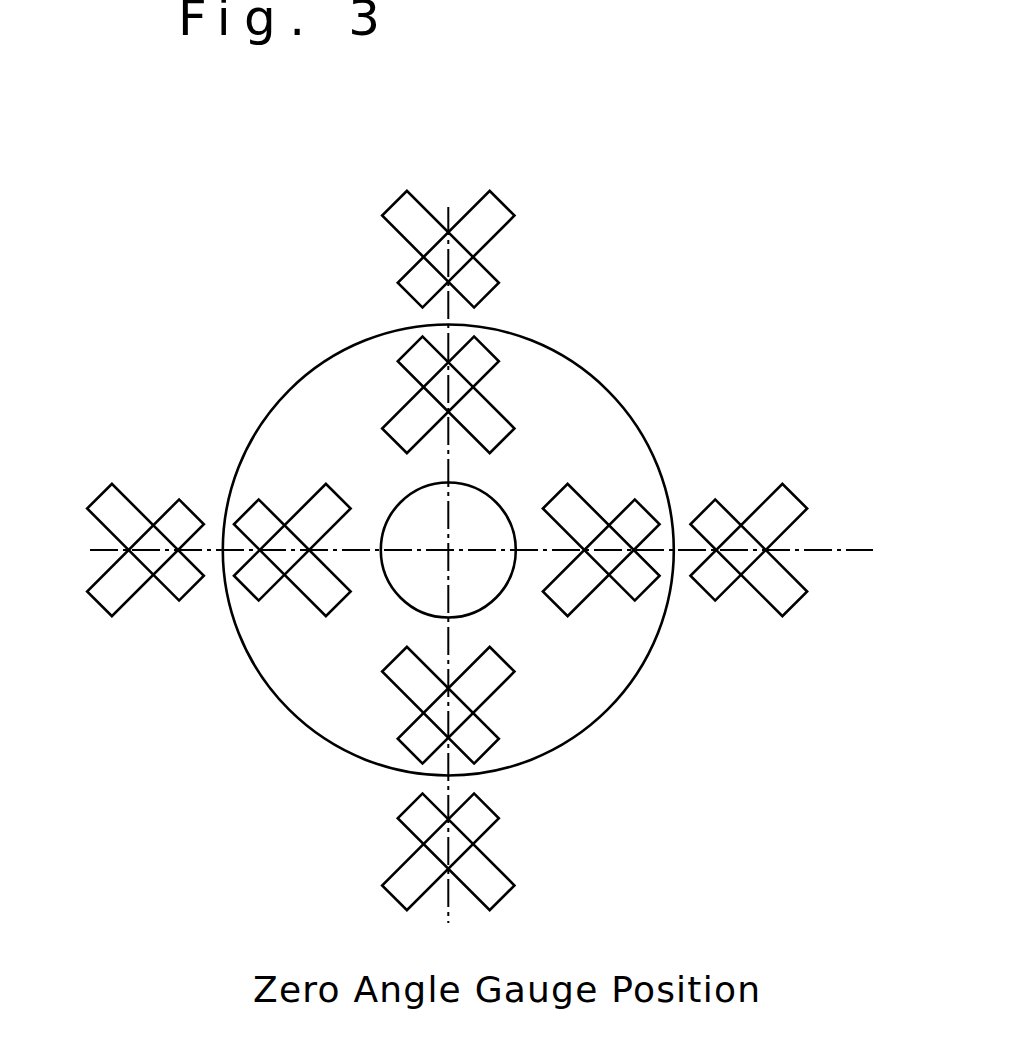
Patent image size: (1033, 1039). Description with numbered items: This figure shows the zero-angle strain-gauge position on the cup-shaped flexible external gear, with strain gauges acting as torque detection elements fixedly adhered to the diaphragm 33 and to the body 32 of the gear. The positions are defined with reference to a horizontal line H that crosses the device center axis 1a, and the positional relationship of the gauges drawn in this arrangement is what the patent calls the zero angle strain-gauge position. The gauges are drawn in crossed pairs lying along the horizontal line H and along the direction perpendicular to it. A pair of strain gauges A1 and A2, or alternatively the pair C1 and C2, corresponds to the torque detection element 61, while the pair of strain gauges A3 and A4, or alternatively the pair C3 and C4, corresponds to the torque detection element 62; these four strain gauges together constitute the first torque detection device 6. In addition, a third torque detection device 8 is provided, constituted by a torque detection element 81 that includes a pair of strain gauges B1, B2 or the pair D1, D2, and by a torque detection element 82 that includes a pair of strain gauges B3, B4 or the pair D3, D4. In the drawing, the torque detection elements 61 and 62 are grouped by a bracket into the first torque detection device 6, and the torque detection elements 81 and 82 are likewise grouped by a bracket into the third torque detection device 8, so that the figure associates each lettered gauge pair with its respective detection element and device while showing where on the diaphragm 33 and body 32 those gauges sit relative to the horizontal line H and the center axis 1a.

The device center axis 1a is at (446, 549).
The body 32 is at (720, 330).
The diaphragm 33 is at (580, 434).
The first torque detection device 6 is at (777, 760).
The torque detection element 61 is at (690, 615).
The torque detection element 62 is at (520, 788).
The third torque detection device 8 is at (208, 246).
The torque detection element 81 is at (210, 478).
The torque detection element 82 is at (362, 311).
The horizontal line H is at (860, 553).
The strain gauge A1 is at (601, 542).
The strain gauge A2 is at (601, 557).
The strain gauge A3 is at (456, 705).
The strain gauge A4 is at (440, 705).
The strain gauge B1 is at (292, 557).
The strain gauge B2 is at (292, 542).
The strain gauge B3 is at (440, 394).
The strain gauge B4 is at (456, 394).
The strain gauge C1 is at (748, 557).
The strain gauge C2 is at (748, 542).
The strain gauge C3 is at (440, 851).
The strain gauge C4 is at (456, 851).
The strain gauge D1 is at (145, 542).
The strain gauge D2 is at (145, 557).
The strain gauge D3 is at (456, 249).
The strain gauge D4 is at (440, 249).